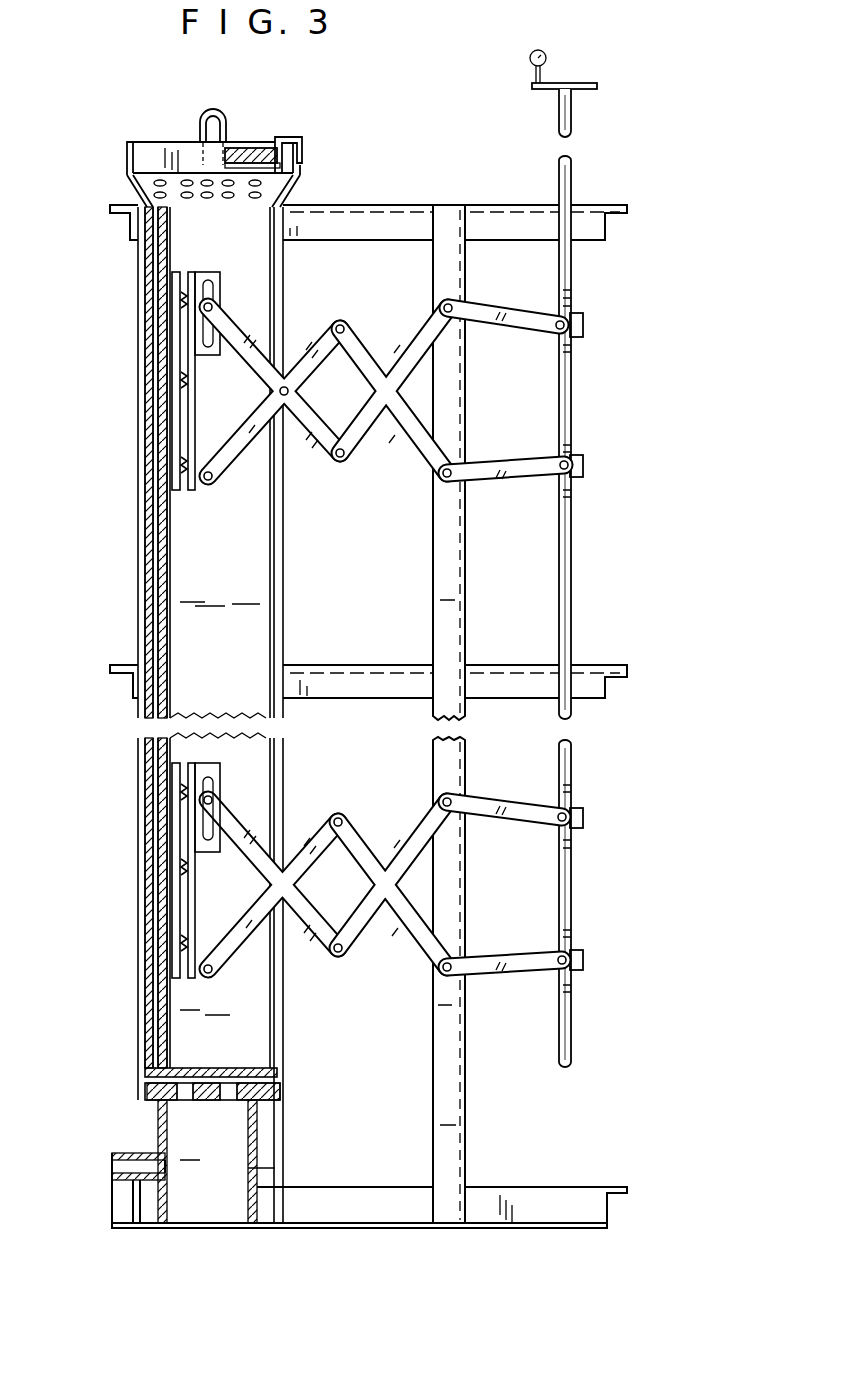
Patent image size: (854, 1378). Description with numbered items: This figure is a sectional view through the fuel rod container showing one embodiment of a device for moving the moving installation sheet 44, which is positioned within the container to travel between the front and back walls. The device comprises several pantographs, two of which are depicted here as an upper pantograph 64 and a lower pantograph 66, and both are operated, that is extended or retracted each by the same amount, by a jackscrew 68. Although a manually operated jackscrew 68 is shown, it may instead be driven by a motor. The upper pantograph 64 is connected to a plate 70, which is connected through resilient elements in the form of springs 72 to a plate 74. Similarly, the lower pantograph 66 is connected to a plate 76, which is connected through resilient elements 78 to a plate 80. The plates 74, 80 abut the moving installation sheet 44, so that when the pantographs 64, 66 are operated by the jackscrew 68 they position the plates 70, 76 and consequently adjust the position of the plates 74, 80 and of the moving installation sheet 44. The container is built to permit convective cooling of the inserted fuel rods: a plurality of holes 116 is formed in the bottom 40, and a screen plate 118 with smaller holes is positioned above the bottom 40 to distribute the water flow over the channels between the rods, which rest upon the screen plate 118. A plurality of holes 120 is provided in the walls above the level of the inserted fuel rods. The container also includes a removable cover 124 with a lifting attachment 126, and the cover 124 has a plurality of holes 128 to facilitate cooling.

The bottom 40 is at (280, 1092).
The moving installation sheet 44 is at (170, 263).
The upper pantograph 64 is at (545, 320).
The lower pantograph 66 is at (528, 812).
The jackscrew 68 is at (572, 109).
The plate 70 is at (200, 488).
The springs 72 is at (183, 296).
The plate 74 is at (175, 492).
The plate 76 is at (198, 979).
The resilient elements 78 is at (183, 790).
The plate 80 is at (175, 980).
The holes 116 is at (228, 1100).
The screen plate 118 is at (270, 1073).
The holes 120 is at (160, 184).
The removable cover 124 is at (284, 136).
The lifting attachment 126 is at (201, 118).
The holes 128 is at (250, 157).